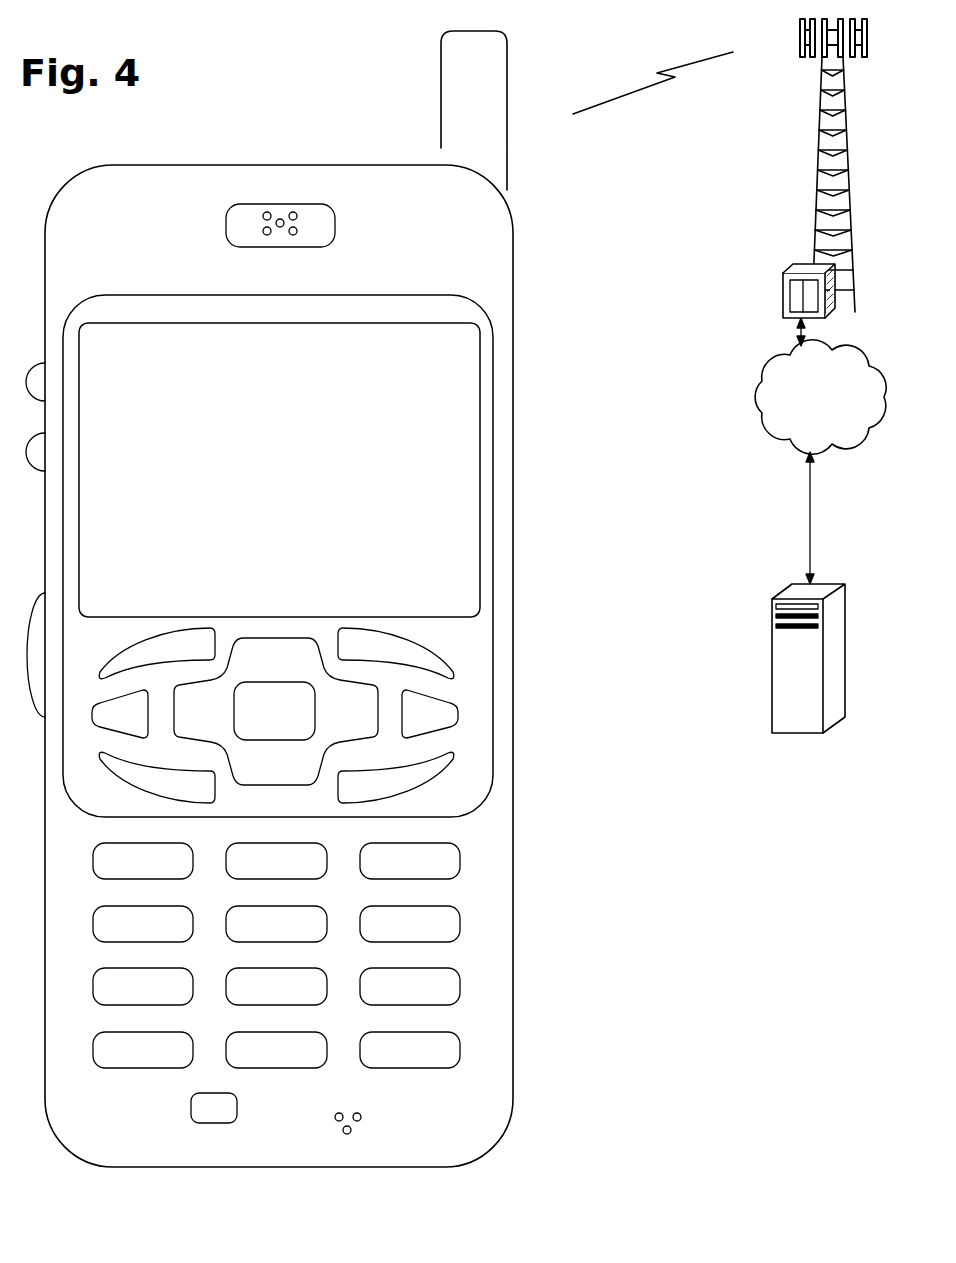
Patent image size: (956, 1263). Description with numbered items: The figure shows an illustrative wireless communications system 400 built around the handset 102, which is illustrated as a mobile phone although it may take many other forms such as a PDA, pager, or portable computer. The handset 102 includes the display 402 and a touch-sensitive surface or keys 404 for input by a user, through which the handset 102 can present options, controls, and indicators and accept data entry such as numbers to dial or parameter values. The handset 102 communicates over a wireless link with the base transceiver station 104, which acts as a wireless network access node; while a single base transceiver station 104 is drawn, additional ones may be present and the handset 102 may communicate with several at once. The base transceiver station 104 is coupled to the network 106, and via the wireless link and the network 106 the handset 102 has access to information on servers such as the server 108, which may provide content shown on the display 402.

The wireless communications system 400 is at (234, 48).
The handset 102 is at (118, 1167).
The base transceiver station 104 is at (816, 181).
The network 106 is at (758, 409).
The server 108 is at (795, 733).
The display 402 is at (480, 378).
The keys 404 is at (513, 1093).